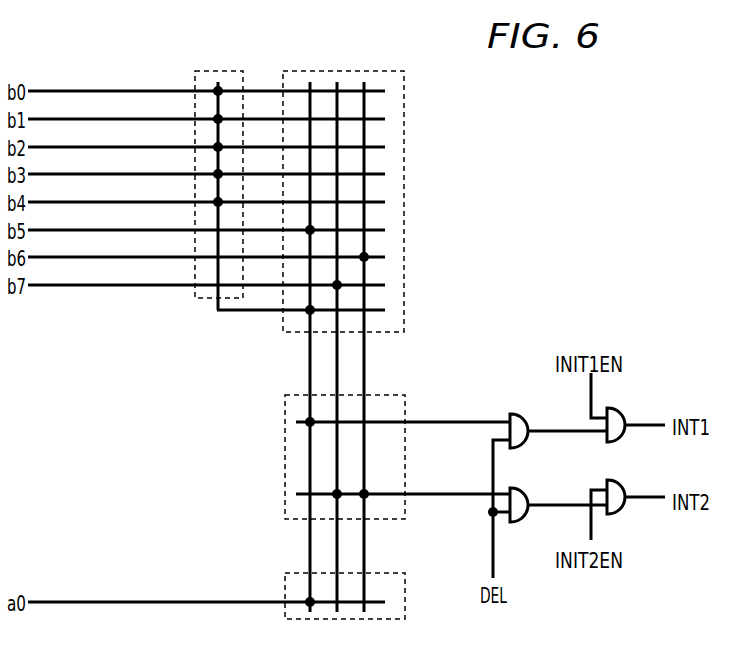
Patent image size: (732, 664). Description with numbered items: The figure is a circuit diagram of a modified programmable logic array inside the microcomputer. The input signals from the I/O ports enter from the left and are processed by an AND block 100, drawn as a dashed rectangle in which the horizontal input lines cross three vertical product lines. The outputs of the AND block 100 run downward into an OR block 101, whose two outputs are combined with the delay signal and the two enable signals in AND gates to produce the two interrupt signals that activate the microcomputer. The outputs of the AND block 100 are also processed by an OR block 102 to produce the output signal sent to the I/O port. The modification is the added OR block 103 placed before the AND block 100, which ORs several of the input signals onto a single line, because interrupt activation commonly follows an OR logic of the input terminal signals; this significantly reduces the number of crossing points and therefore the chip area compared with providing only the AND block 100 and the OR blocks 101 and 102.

The AND block 100 is at (404, 195).
The OR block 101 is at (405, 503).
The OR block 102 is at (405, 594).
The OR block 103 is at (222, 71).